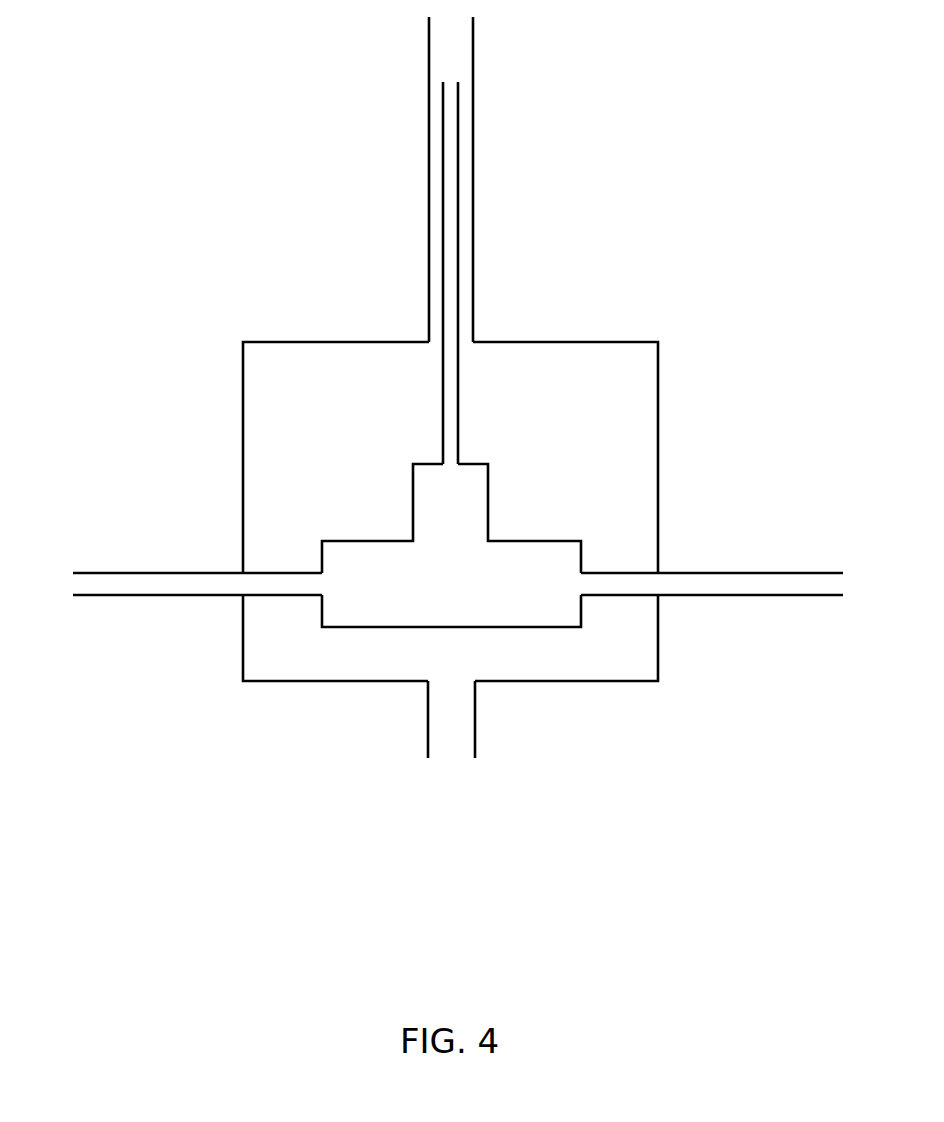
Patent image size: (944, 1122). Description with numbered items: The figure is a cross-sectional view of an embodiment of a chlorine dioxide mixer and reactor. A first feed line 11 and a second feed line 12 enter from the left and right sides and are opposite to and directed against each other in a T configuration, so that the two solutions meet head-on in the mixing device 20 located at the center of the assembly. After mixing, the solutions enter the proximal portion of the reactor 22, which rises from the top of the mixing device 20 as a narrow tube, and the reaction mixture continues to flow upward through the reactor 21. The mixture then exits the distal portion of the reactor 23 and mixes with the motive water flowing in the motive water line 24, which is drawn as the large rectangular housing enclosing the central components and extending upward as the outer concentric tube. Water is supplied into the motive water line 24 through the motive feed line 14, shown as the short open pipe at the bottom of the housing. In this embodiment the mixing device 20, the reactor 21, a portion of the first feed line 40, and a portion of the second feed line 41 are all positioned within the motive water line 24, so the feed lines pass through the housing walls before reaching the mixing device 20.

The first feed line 11 is at (122, 572).
The second feed line 12 is at (722, 573).
The motive feed line 14 is at (476, 750).
The mixing device 20 is at (400, 605).
The reactor 21 is at (443, 274).
The proximal portion of the reactor 22 is at (460, 440).
The distal portion of the reactor 23 is at (443, 95).
The motive water line 24 is at (608, 423).
The portion of the first feed line 40 is at (290, 572).
The portion of the second feed line 41 is at (620, 598).